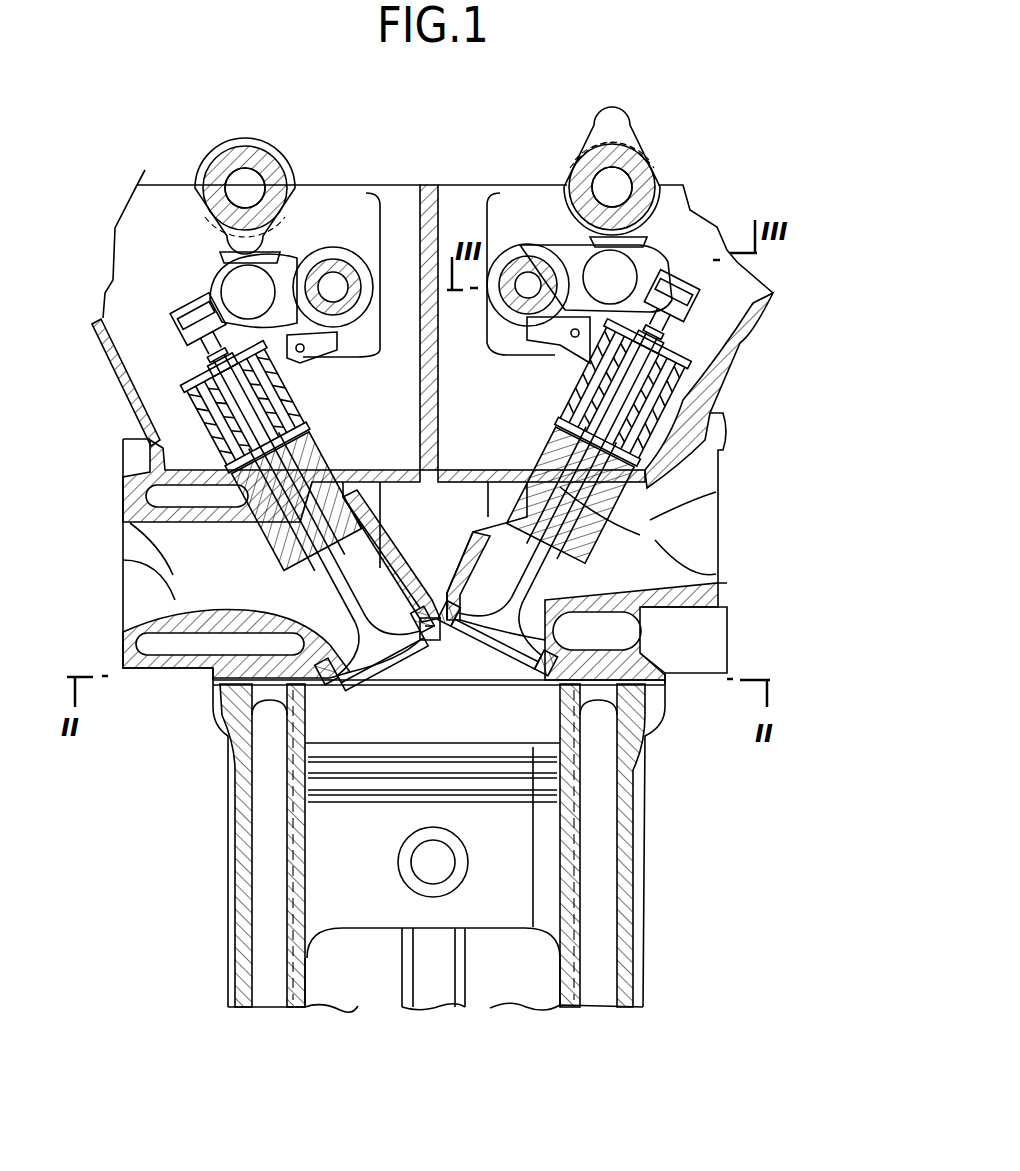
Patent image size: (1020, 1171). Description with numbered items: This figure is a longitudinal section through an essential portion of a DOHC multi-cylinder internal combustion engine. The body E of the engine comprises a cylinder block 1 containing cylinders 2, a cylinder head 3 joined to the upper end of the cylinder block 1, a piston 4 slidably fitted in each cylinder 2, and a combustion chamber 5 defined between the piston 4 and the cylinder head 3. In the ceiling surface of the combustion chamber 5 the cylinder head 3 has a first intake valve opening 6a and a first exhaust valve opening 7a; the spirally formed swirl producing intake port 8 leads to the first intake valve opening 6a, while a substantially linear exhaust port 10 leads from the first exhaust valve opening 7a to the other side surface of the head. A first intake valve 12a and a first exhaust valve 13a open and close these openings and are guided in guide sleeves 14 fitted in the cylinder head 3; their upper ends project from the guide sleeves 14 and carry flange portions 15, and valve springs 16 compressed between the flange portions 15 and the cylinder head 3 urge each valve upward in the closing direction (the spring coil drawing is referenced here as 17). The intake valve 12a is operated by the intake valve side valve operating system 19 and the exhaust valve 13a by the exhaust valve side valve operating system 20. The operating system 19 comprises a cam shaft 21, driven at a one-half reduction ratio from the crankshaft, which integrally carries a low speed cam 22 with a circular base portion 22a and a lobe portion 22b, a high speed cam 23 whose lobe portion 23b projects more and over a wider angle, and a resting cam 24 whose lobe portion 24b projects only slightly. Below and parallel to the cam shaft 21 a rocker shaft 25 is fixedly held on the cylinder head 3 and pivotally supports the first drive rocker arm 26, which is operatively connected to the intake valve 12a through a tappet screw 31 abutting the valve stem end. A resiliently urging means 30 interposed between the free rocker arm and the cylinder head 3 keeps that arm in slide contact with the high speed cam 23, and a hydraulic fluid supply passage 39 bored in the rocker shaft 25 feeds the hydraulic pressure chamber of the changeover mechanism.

The cylinder block 1 is at (627, 760).
The cylinder 2 is at (560, 980).
The cylinder head 3 is at (672, 668).
The piston 4 is at (361, 918).
The combustion chamber 5 is at (438, 727).
The first intake valve opening 6a is at (512, 663).
The first exhaust valve opening 7a is at (339, 665).
The swirl producing intake port 8 is at (643, 513).
The exhaust port 10 is at (170, 608).
The first intake valve 12a is at (550, 538).
The first exhaust valve 13a is at (330, 580).
The guide sleeve 14 is at (313, 449).
The flange portion 15 is at (182, 378).
The valve spring 16 is at (298, 420).
The valve spring 17 is at (436, 396).
The intake valve side valve operating system 19 is at (530, 223).
The exhaust valve side valve operating system 20 is at (300, 228).
The cam shaft 21 is at (657, 176).
The low speed cam 22 is at (636, 120).
The circular base portion 22a is at (680, 193).
The lobe portion 22b is at (588, 129).
The high speed cam 23 is at (603, 115).
The lobe portion 23b is at (617, 118).
The resting cam 24 is at (640, 141).
The lobe portion 24b is at (590, 151).
The rocker shaft 25 is at (512, 298).
The first drive rocker arm 26 is at (577, 253).
The resiliently urging means 30 is at (557, 366).
The tappet screw 31 is at (693, 267).
The hydraulic fluid supply passage 39 is at (530, 263).
The body E is at (697, 690).